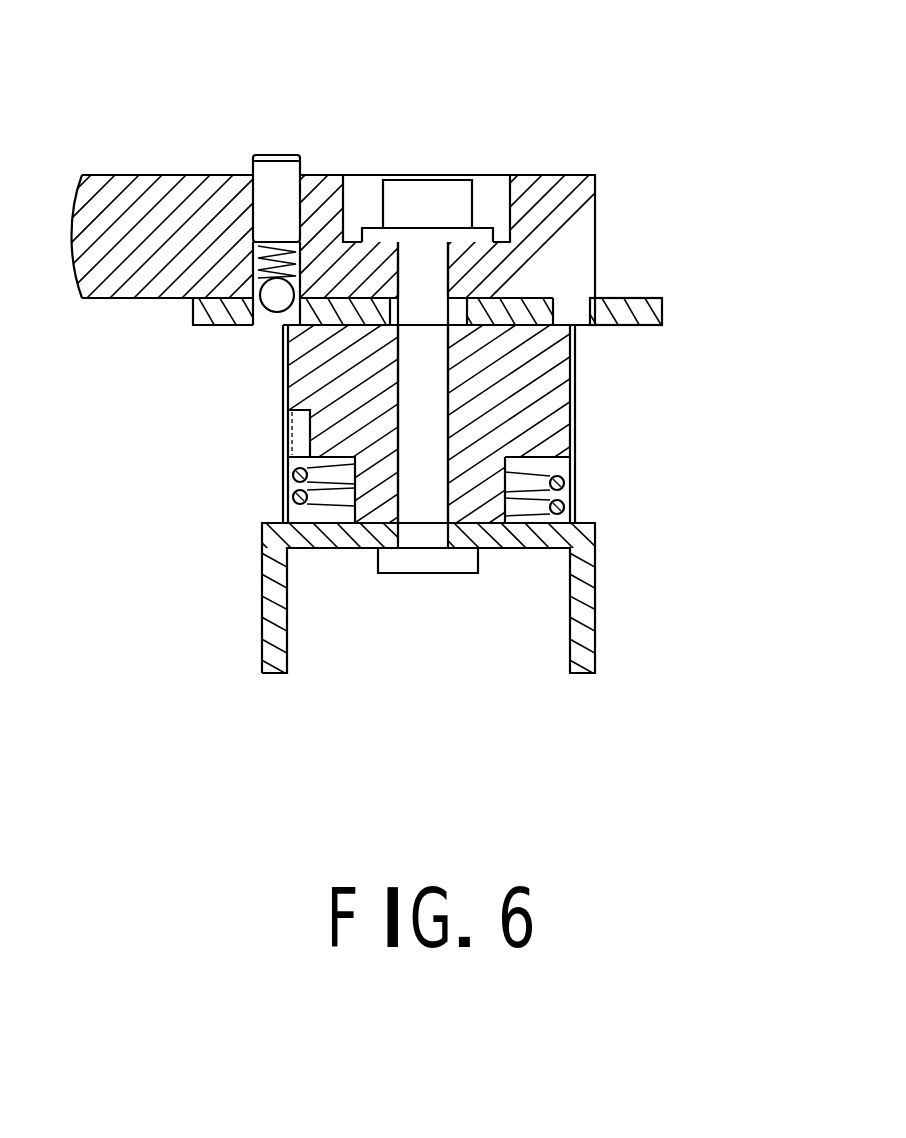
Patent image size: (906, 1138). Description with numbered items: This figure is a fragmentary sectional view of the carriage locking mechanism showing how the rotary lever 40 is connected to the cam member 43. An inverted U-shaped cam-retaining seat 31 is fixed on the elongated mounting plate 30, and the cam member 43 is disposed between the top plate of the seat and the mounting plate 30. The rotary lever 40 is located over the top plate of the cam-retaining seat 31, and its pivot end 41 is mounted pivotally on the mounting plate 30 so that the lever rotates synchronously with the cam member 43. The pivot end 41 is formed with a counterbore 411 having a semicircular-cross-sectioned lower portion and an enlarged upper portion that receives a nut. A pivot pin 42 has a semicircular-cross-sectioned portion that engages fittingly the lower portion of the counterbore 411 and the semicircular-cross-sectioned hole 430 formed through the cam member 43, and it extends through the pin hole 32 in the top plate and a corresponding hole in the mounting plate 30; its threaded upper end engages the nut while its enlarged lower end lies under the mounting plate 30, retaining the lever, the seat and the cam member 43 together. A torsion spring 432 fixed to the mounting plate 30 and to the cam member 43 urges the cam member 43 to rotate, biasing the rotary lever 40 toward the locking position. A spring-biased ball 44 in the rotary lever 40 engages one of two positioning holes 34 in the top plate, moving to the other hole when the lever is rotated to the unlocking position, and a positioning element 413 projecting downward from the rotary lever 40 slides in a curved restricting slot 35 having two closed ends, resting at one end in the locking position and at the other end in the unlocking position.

The mounting plate 30 is at (648, 600).
The cam-retaining seat 31 is at (650, 325).
The pin hole 32 is at (462, 305).
The positioning holes 34 is at (272, 322).
The restricting slot 35 is at (628, 298).
The rotary lever 40 is at (164, 143).
The pivot end 41 is at (555, 200).
The counterbore 411 is at (450, 263).
The positioning element 413 is at (574, 325).
The pivot pin 42 is at (418, 520).
The cam member 43 is at (550, 420).
The semicircular-cross-sectioned hole 430 is at (403, 470).
The torsion spring 432 is at (292, 502).
The spring-biased ball 44 is at (273, 295).